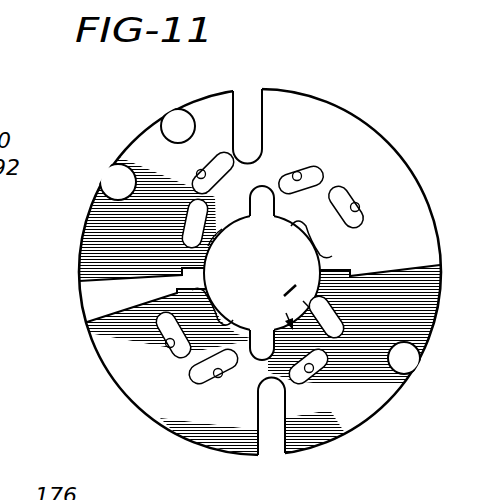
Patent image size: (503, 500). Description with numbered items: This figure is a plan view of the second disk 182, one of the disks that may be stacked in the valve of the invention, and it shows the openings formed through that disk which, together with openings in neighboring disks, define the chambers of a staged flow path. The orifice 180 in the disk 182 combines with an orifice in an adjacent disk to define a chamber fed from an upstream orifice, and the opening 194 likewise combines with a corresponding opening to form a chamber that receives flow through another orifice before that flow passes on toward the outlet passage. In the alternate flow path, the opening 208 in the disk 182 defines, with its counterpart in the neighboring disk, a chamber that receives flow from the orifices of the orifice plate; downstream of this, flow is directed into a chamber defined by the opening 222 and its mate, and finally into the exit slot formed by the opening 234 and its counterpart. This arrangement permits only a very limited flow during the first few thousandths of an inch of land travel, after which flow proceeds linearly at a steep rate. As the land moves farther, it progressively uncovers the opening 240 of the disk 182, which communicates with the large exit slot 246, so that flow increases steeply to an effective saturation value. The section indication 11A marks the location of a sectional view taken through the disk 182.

The disk 182 is at (357, 111).
The opening 222 is at (203, 170).
The opening 234 is at (249, 142).
The orifice 180 is at (307, 178).
The opening 194 is at (357, 212).
The exit slot 246 is at (393, 265).
The opening 240 is at (310, 250).
The opening 208 is at (213, 240).
The section line 11A is at (291, 307).